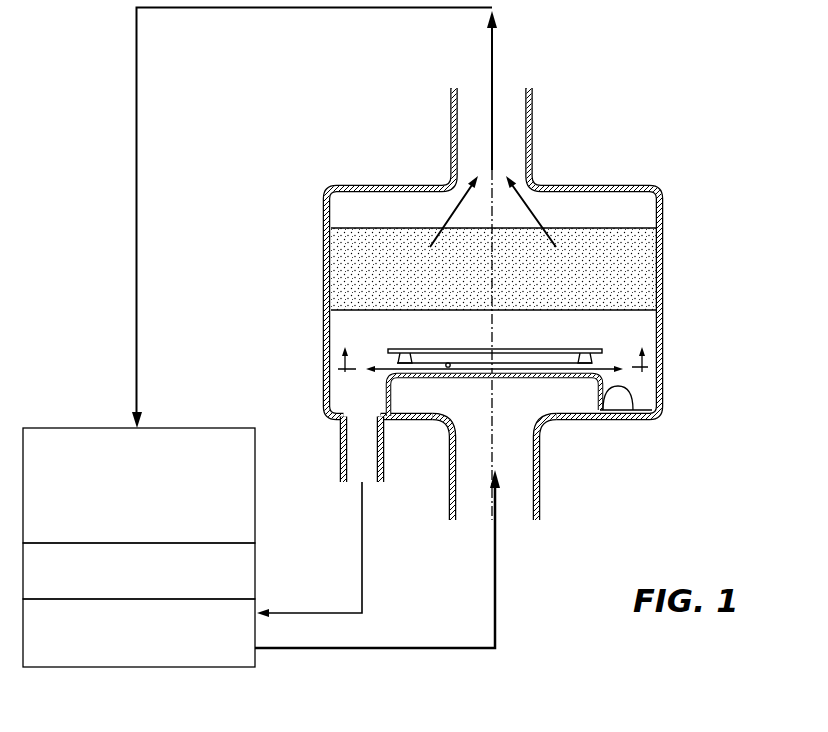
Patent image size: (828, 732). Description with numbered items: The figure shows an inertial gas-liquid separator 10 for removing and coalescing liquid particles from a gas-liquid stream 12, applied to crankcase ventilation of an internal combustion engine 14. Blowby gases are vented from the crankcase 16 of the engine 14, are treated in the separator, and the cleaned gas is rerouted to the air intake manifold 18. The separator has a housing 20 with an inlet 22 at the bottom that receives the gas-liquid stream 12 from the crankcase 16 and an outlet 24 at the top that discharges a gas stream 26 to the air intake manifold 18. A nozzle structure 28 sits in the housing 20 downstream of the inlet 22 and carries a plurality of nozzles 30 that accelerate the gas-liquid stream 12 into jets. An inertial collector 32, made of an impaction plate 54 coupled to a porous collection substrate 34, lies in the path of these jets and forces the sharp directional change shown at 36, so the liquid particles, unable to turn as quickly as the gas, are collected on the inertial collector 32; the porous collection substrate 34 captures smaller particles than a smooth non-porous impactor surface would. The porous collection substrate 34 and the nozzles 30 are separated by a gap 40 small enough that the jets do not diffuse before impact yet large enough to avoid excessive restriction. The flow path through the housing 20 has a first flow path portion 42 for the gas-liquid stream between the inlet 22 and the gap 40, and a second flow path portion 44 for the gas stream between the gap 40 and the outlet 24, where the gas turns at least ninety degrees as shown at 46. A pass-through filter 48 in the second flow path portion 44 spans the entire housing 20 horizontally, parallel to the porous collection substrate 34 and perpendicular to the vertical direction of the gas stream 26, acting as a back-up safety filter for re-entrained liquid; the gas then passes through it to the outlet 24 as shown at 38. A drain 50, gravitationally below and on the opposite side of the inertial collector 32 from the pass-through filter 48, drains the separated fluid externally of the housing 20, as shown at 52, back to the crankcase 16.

The inertial gas-liquid separator 10 is at (360, 152).
The gas-liquid stream 12 is at (497, 565).
The internal combustion engine 14 is at (256, 572).
The crankcase 16 is at (138, 667).
The air intake manifold 18 is at (195, 428).
The housing 20 is at (620, 184).
The inlet 22 is at (537, 473).
The outlet 24 is at (533, 112).
The gas stream 26 is at (497, 62).
The nozzle structure 28 is at (628, 422).
The nozzles 30 is at (428, 378).
The inertial collector 32 is at (500, 342).
The porous collection substrate 34 is at (447, 362).
The sharp directional change 36 is at (405, 356).
The gas stream flow to outlet 38 is at (455, 212).
The gap 40 is at (482, 373).
The first flow path portion 42 is at (497, 388).
The second flow path portion 44 is at (486, 165).
The directional change 46 is at (338, 369).
The pass-through filter 48 is at (350, 264).
The drain 50 is at (342, 446).
The drain flow 52 is at (362, 518).
The impaction plate 54 is at (597, 352).